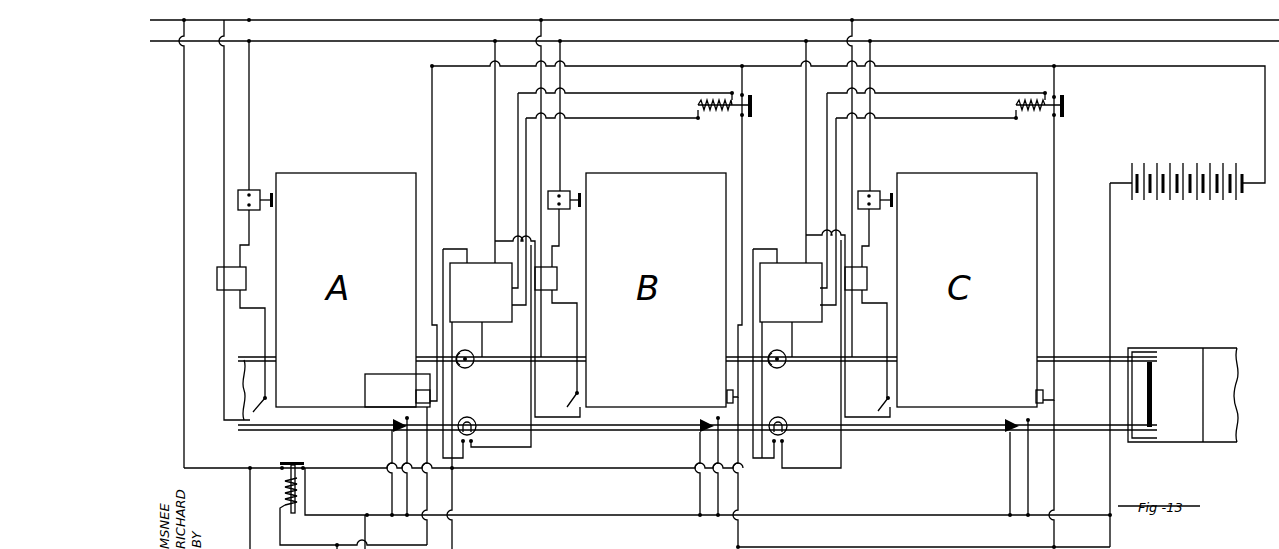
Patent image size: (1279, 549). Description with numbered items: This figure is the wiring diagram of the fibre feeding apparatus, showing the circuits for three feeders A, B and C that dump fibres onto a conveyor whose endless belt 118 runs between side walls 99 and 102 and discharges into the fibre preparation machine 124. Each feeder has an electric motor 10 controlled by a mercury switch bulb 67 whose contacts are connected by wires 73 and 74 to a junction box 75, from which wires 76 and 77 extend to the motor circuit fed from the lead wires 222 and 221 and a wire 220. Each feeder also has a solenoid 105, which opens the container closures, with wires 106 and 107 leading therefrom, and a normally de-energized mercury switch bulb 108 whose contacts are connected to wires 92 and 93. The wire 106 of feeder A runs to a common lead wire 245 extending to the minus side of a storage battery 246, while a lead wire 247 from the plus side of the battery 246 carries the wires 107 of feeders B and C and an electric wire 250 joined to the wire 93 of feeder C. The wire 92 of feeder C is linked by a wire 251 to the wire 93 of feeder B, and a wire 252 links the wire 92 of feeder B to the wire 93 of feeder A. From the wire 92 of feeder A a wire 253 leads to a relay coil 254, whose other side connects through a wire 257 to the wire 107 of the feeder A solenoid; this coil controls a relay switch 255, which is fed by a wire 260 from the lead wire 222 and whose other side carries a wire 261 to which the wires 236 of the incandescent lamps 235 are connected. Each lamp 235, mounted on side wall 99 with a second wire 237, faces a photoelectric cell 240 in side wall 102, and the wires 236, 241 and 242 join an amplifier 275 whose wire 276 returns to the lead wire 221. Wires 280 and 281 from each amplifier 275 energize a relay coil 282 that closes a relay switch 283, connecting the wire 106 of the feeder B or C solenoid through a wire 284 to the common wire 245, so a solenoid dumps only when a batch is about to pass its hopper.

The lead wire 222 is at (709, 21).
The lead wire 221 is at (436, 41).
The conductor 220 is at (251, 77).
The common lead wire 245 is at (705, 62).
The electric wire 280 is at (598, 94).
The electric wire 281 is at (599, 119).
The relay coil 282 is at (716, 112).
The relay switch 283 is at (753, 108).
The wire 284 is at (742, 86).
The storage battery 246 is at (1182, 164).
The lead wire 247 is at (1111, 255).
The wire 106 is at (432, 116).
The electric wire 276 is at (494, 134).
The wire 77 is at (223, 197).
The electric motor 10 is at (251, 189).
The wire 76 is at (249, 235).
The junction box 75 is at (216, 275).
The wire 73 is at (262, 310).
The wire 74 is at (223, 344).
The wire 260 is at (183, 307).
The amplifier 275 is at (480, 263).
The electric wire 242 is at (455, 330).
The electric wire 241 is at (483, 342).
The photoelectric cell 240 is at (467, 370).
The side wall 99 is at (533, 363).
The mercury switch bulb 67 is at (267, 398).
The solenoid 105 is at (415, 396).
The wire 236 is at (440, 396).
The incandescent lamp 235 is at (473, 419).
The mercury switch bulb 108 is at (395, 432).
The wire 237 is at (521, 449).
The side wall 102 is at (582, 428).
The wire 261 is at (360, 474).
The relay switch 255 is at (292, 463).
The relay coil 254 is at (288, 493).
The wire 253 is at (347, 514).
The wire 257 is at (281, 526).
The wire 92 is at (391, 490).
The wire 93 is at (407, 517).
The wire 107 is at (430, 496).
The wire 252 is at (594, 515).
The wire 251 is at (921, 510).
The electric wire 250 is at (1083, 506).
The fibre preparation machine 124 is at (1189, 348).
The endless belt 118 is at (1153, 393).